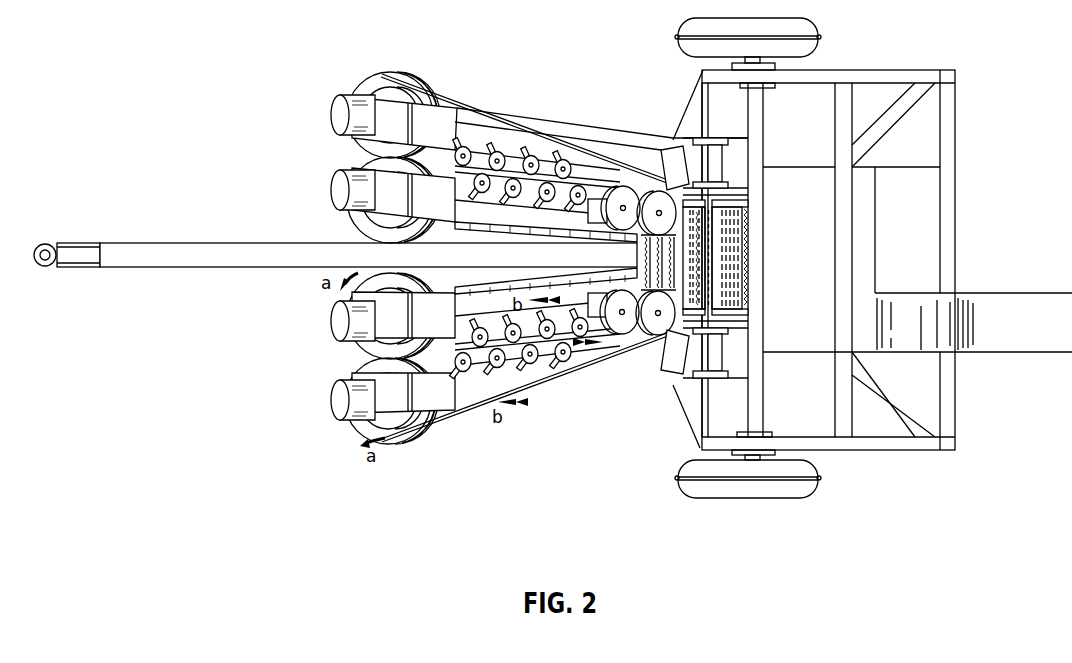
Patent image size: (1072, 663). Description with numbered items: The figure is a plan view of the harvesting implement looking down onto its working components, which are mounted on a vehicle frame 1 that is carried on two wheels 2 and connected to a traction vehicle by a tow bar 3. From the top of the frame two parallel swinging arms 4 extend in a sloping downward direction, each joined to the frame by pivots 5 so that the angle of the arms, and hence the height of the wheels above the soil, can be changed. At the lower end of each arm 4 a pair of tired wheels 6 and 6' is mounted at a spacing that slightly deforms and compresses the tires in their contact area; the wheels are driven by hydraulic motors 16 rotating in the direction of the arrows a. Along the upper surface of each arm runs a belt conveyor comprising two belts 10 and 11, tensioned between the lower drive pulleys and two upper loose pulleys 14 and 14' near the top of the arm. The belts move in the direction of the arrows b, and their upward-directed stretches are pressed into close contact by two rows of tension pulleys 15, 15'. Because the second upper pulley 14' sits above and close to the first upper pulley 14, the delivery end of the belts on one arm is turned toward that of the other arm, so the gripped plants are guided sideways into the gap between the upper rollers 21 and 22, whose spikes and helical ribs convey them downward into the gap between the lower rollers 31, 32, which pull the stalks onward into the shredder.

The vehicle frame 1 is at (865, 444).
The wheels 2 is at (685, 47).
The tow bar 3 is at (175, 252).
The swinging arm 4 is at (563, 132).
The pivot 5 is at (713, 166).
The tired wheel 6 is at (365, 258).
The tired wheel 6' is at (366, 242).
The belt 10 is at (530, 227).
The belt 11 is at (452, 106).
The first upper loose pulley 14 is at (620, 317).
The second upper loose pulley 14' is at (662, 297).
The tension pulley 15 is at (520, 293).
The tension pulley 15' is at (518, 311).
The hydraulic motor 16 is at (338, 115).
The upper roller 21 is at (683, 292).
The upper roller 22 is at (637, 265).
The lower roller 31 is at (750, 221).
The lower roller 32 is at (720, 251).